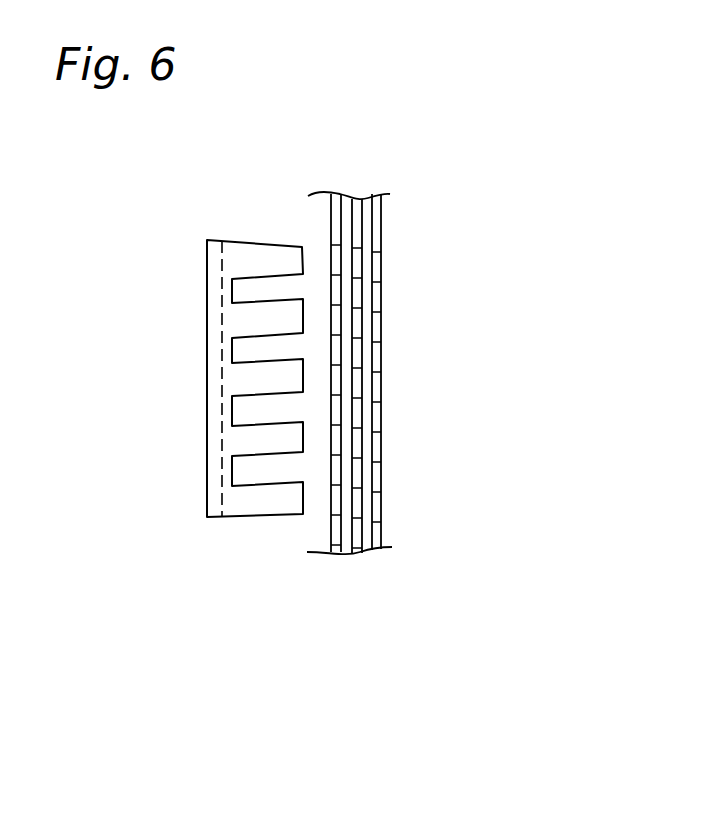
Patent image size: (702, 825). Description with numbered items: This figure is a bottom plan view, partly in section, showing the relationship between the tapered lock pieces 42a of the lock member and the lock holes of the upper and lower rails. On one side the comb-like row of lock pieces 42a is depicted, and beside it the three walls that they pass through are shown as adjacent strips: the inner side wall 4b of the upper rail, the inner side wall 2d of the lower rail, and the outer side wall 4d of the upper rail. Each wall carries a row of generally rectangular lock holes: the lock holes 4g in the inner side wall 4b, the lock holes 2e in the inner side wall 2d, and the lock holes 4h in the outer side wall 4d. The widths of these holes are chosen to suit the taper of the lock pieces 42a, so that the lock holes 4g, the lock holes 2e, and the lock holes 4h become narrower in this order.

The lock pieces 42a is at (245, 503).
The lock holes 4g is at (330, 503).
The inner side wall 4b is at (323, 548).
The inner side walls 2d is at (358, 542).
The lock holes 2e is at (380, 543).
The outer side wall 4d is at (380, 472).
The lock holes 4h is at (380, 438).